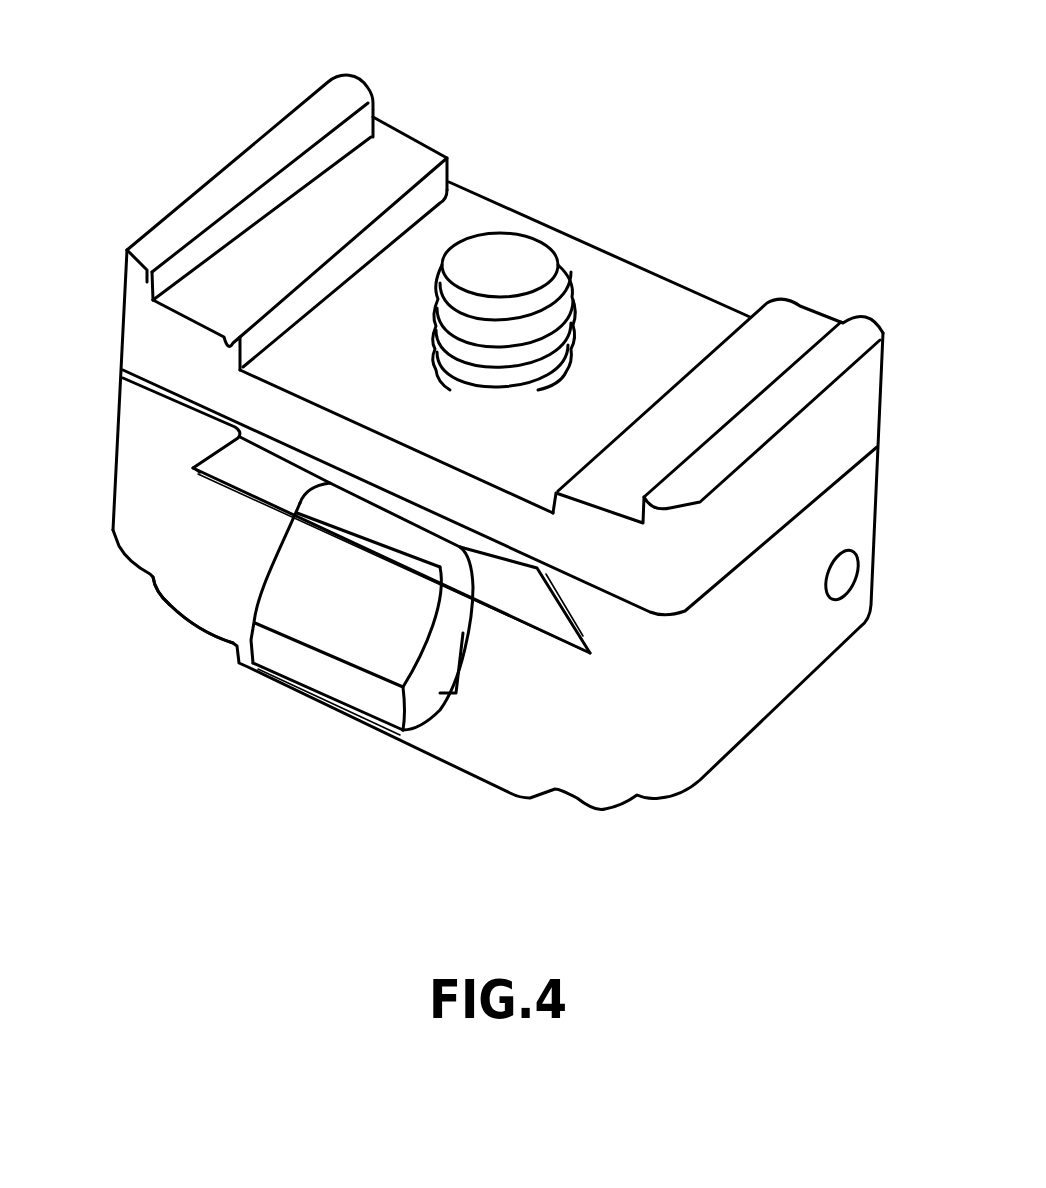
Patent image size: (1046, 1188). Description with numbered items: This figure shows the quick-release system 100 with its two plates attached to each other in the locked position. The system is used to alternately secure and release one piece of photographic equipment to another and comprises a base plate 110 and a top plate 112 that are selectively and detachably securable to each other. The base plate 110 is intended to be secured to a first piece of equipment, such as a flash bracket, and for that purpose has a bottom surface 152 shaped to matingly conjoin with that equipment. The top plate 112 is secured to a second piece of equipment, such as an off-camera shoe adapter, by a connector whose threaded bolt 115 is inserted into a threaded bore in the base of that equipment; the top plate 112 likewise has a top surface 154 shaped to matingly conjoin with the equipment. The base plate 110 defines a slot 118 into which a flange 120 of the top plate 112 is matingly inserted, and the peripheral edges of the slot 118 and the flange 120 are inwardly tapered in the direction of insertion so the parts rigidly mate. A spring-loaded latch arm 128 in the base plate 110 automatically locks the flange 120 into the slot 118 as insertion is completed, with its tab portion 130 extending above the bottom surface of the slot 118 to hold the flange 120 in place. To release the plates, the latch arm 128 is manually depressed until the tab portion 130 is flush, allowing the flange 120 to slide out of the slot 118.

The quick-release system 100 is at (714, 148).
The base plate 110 is at (733, 750).
The top plate 112 is at (245, 178).
The threaded bolt 115 is at (520, 268).
The slot 118 is at (205, 478).
The flange 120 is at (356, 515).
The latch arm 128 is at (320, 678).
The tab portion 130 is at (362, 606).
The bottom surface 152 is at (182, 623).
The top surface 154 is at (452, 230).